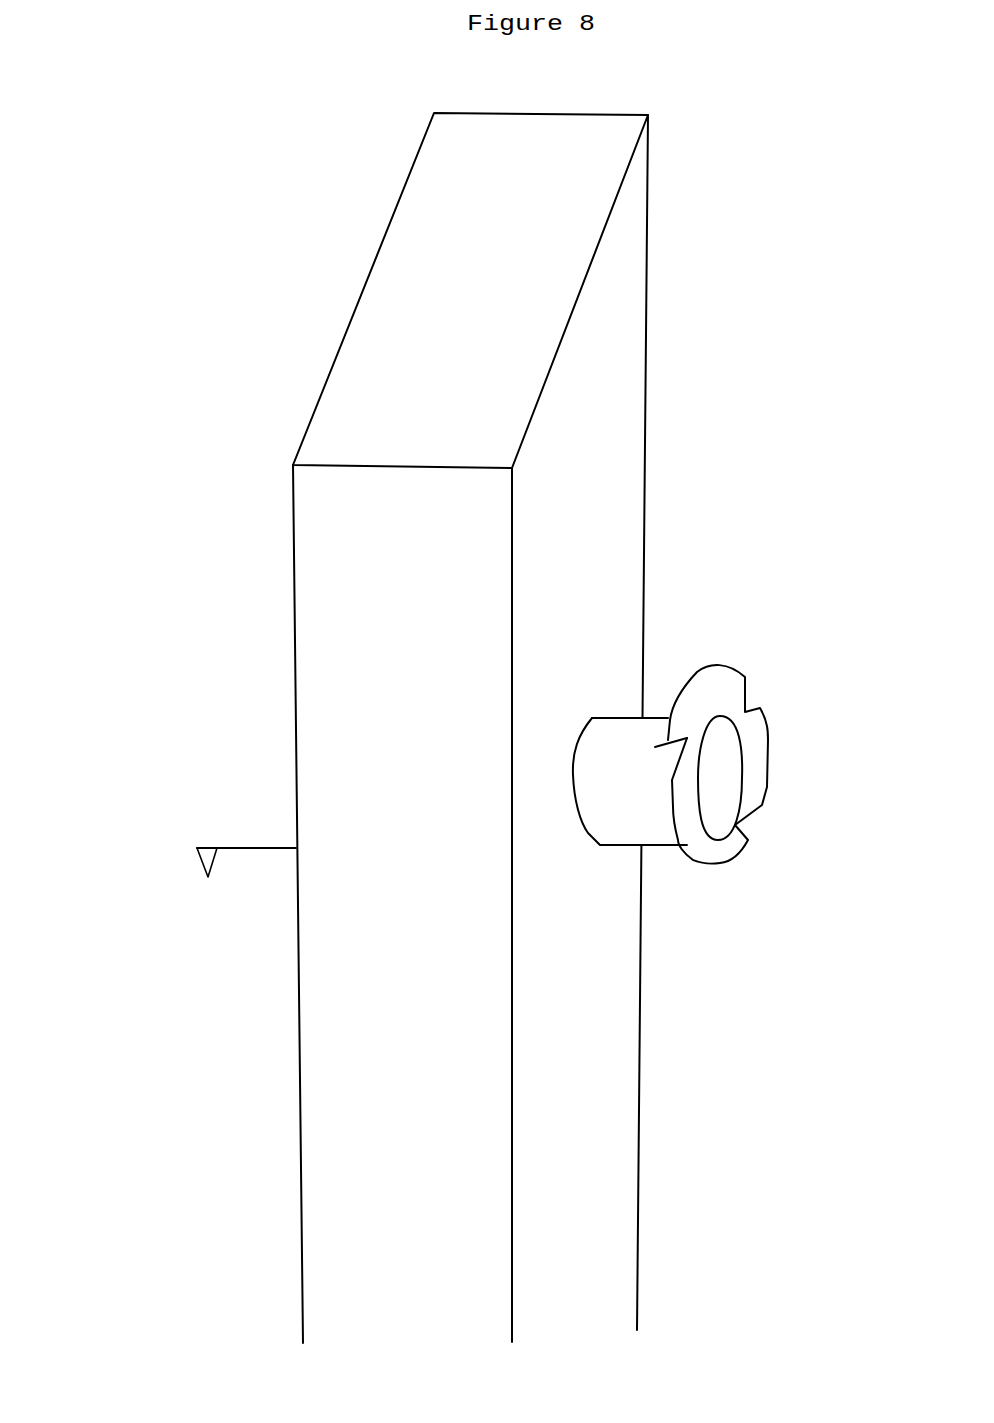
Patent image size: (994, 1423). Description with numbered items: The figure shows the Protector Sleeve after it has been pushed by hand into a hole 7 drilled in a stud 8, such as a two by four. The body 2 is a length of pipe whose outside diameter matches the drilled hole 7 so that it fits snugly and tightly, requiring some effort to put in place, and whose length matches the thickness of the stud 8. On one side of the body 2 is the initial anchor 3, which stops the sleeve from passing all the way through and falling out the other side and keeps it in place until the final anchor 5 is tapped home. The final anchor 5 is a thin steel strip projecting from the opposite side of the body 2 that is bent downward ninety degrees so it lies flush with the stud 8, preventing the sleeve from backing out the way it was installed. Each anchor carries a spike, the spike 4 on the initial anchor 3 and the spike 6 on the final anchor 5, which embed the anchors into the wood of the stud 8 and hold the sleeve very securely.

The body 2 is at (722, 834).
The initial anchor 3 is at (725, 697).
The spike 4 is at (668, 740).
The final anchor 5 is at (267, 847).
The spike 6 is at (202, 863).
The hole 7 is at (655, 813).
The stud 8 is at (388, 567).